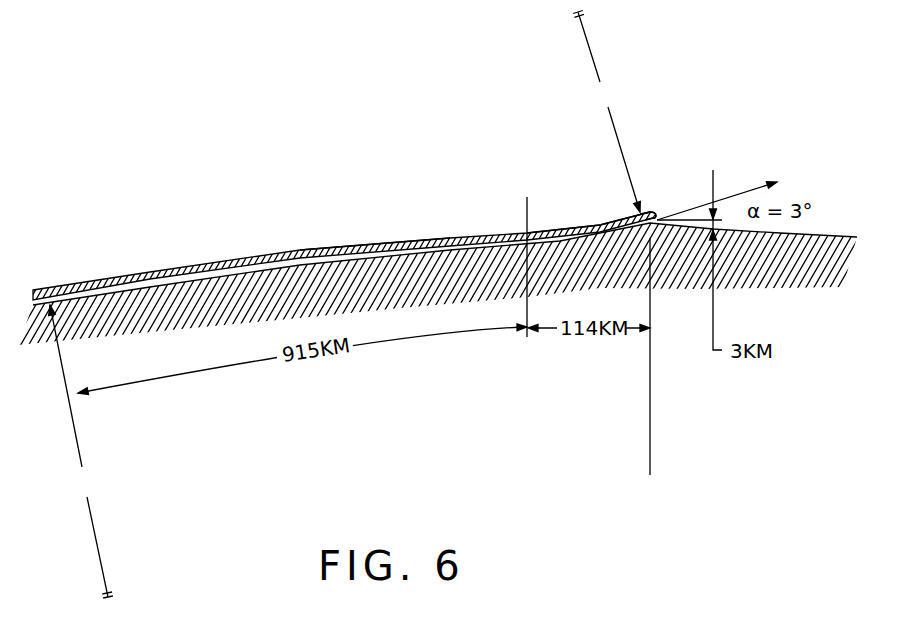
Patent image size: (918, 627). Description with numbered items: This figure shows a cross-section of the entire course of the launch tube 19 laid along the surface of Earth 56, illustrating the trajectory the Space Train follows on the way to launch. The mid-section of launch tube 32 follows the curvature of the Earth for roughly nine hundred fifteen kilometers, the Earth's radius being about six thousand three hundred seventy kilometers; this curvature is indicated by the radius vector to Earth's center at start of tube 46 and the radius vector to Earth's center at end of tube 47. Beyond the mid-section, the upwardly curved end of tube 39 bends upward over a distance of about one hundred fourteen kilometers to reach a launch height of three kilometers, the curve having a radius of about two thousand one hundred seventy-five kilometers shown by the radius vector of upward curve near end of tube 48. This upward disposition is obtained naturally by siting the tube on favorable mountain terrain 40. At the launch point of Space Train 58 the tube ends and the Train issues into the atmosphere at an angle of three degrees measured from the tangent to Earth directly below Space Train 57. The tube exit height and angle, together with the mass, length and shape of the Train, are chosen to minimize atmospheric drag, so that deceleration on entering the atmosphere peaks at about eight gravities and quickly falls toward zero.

The launch tube 19 is at (82, 292).
The surface of Earth 56 is at (155, 270).
The mid-section of launch tube 32 is at (335, 260).
The upwardly curved end of tube 39 is at (552, 228).
The mountain terrain 40 is at (609, 220).
The launch point of Space Train 58 is at (647, 215).
The tangent to Earth directly below Space Train 57 is at (697, 218).
The radius vector of upward curve near end of tube 48 is at (597, 60).
The radius vector to Earth's center at start of tube 46 is at (59, 355).
The radius vector to Earth's center at end of tube 47 is at (650, 418).